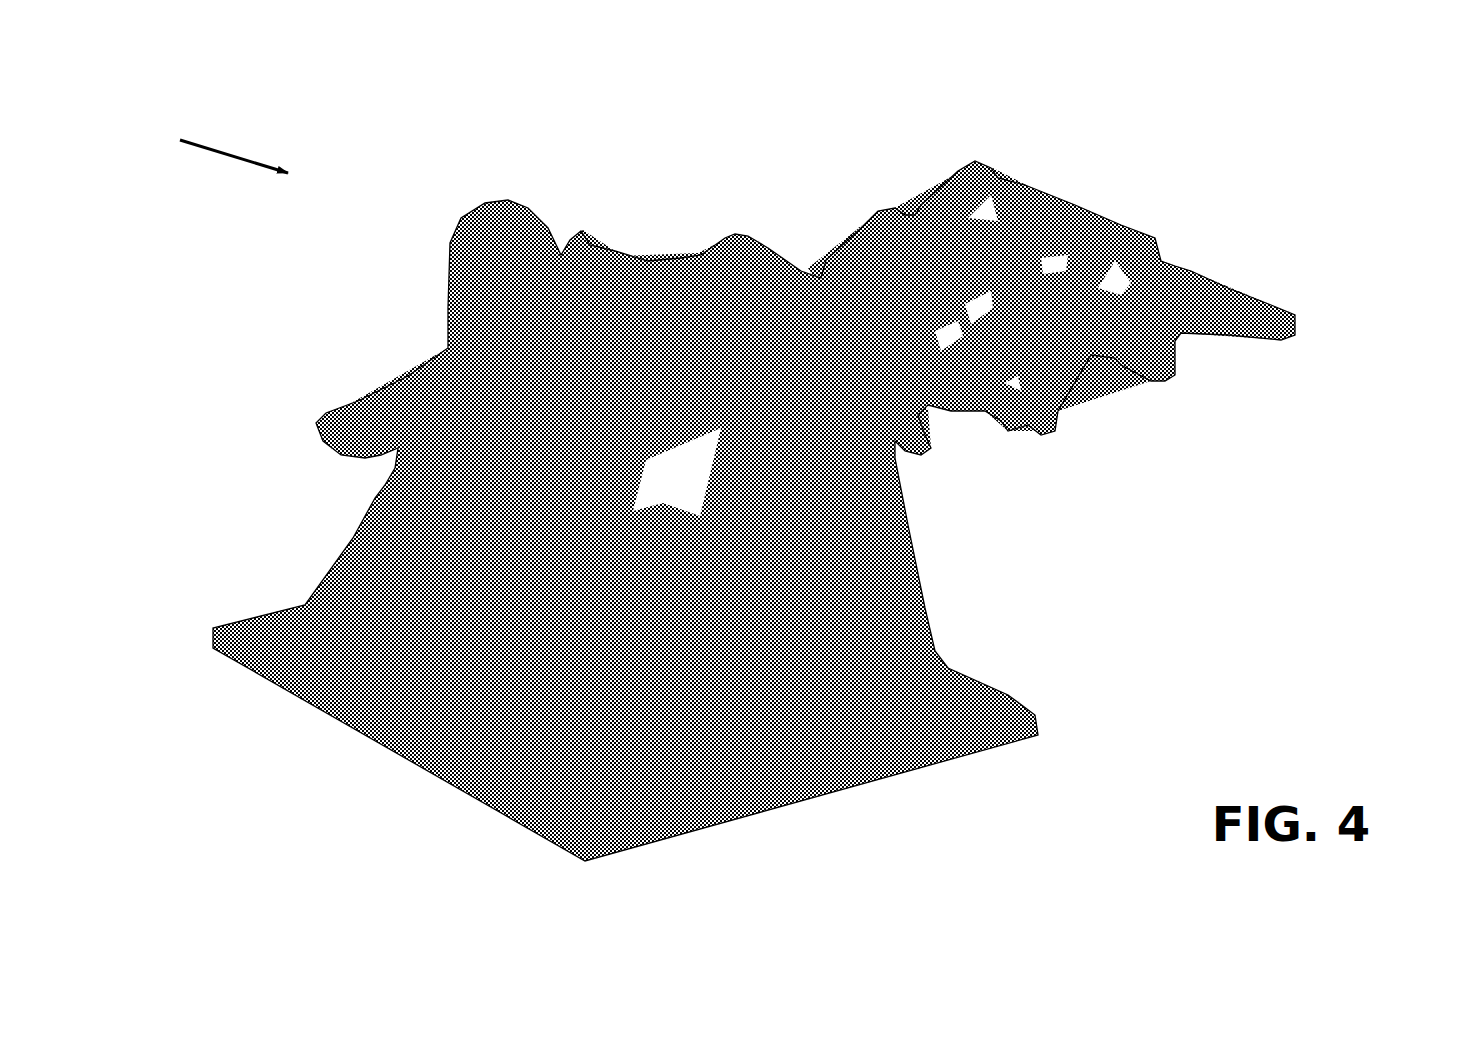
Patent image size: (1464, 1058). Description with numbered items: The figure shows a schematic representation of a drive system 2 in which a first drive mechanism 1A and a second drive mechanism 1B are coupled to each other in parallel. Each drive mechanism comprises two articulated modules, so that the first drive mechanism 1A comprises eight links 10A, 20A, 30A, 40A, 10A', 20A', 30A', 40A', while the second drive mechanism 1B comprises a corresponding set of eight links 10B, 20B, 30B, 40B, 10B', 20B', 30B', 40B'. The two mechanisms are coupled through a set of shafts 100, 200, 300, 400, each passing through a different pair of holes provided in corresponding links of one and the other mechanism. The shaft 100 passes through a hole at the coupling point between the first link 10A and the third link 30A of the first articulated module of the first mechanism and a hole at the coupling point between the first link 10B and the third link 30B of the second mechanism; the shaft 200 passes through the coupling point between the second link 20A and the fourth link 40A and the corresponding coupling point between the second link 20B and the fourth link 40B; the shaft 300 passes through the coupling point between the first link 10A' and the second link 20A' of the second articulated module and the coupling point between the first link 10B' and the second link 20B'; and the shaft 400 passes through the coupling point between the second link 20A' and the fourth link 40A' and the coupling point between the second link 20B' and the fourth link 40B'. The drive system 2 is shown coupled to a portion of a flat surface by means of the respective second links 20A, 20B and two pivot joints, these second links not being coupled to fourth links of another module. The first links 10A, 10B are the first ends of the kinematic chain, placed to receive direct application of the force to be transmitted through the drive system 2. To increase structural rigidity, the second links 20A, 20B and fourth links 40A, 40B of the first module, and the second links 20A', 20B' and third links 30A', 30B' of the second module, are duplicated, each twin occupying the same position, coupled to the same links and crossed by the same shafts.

The drive system 2 is at (211, 141).
The shaft 100 is at (1000, 230).
The shaft 200 is at (960, 265).
The shaft 300 is at (930, 295).
The shaft 400 is at (900, 320).
The first drive mechanism 1A is at (557, 463).
The second drive mechanism 1B is at (460, 368).
The first link 10A is at (490, 630).
The second link 20A is at (975, 470).
The third link 30A is at (918, 500).
The fourth link 40A is at (1047, 460).
The first link 10A' is at (1117, 434).
The second link 20A' is at (1162, 387).
The third link 30A' is at (1219, 383).
The fourth link 40A' is at (1308, 327).
The first link 10B is at (468, 279).
The second link 20B is at (645, 232).
The third link 30B is at (584, 276).
The fourth link 40B is at (639, 209).
The first link 10B' is at (799, 206).
The second link 20B' is at (956, 179).
The third link 30B' is at (889, 187).
The fourth link 40B' is at (1104, 186).